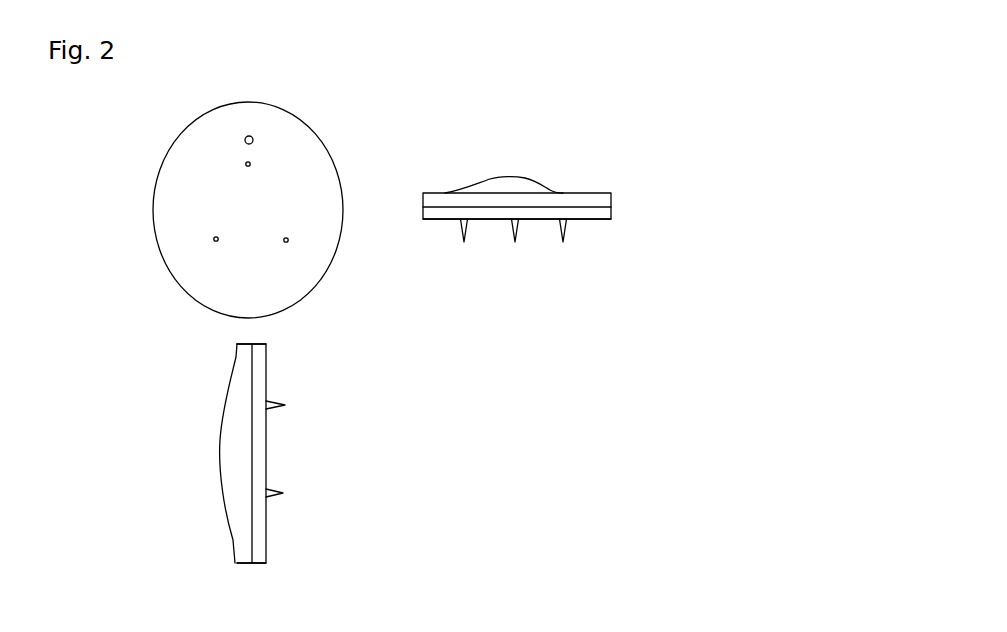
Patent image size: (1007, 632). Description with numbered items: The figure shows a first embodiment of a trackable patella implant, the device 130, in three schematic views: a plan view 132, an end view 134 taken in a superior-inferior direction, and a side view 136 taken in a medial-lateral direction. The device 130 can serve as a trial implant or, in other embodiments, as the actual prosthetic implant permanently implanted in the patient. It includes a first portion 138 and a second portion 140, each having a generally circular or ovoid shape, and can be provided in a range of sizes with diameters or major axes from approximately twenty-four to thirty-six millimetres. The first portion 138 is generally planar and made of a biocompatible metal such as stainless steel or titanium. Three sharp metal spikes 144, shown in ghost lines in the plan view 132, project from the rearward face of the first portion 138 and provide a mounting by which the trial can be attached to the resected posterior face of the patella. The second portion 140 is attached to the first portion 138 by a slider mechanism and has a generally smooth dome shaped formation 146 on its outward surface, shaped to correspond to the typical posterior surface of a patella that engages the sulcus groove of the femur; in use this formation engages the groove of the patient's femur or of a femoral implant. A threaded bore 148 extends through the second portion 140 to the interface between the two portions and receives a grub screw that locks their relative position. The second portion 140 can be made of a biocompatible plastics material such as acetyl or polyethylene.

The device 130 is at (501, 74).
The plan view 132 is at (168, 153).
The end view 134 is at (611, 161).
The side view 136 is at (321, 364).
The first portion 138 is at (612, 215).
The second portion 140 is at (612, 198).
The sharp metal spikes 144 is at (565, 235).
The reservoir dome 146 is at (533, 178).
The threaded bore 148 is at (255, 140).